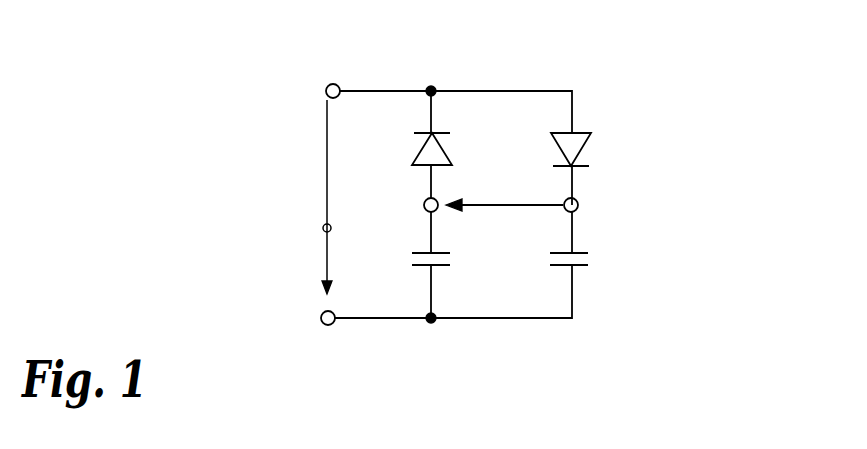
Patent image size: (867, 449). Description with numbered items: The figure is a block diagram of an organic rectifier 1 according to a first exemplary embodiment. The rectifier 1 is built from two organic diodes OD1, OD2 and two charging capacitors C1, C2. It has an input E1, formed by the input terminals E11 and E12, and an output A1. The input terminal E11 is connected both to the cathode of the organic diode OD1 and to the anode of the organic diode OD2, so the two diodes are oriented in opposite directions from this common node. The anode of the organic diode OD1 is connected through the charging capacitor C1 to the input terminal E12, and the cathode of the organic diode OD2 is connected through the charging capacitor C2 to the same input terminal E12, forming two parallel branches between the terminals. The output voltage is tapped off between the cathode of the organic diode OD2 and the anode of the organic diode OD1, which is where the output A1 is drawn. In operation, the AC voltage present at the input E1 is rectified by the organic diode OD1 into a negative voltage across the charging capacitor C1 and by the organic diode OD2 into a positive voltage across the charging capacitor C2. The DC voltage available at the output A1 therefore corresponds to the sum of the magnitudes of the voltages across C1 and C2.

The rectifier 1 is at (630, 75).
The input terminal E11 is at (326, 91).
The input terminal E12 is at (328, 325).
The input E1 is at (323, 228).
The organic diode OD1 is at (398, 148).
The organic diode OD2 is at (530, 148).
The charging capacitor C1 is at (404, 261).
The charging capacitor C2 is at (542, 261).
The output A1 is at (517, 200).